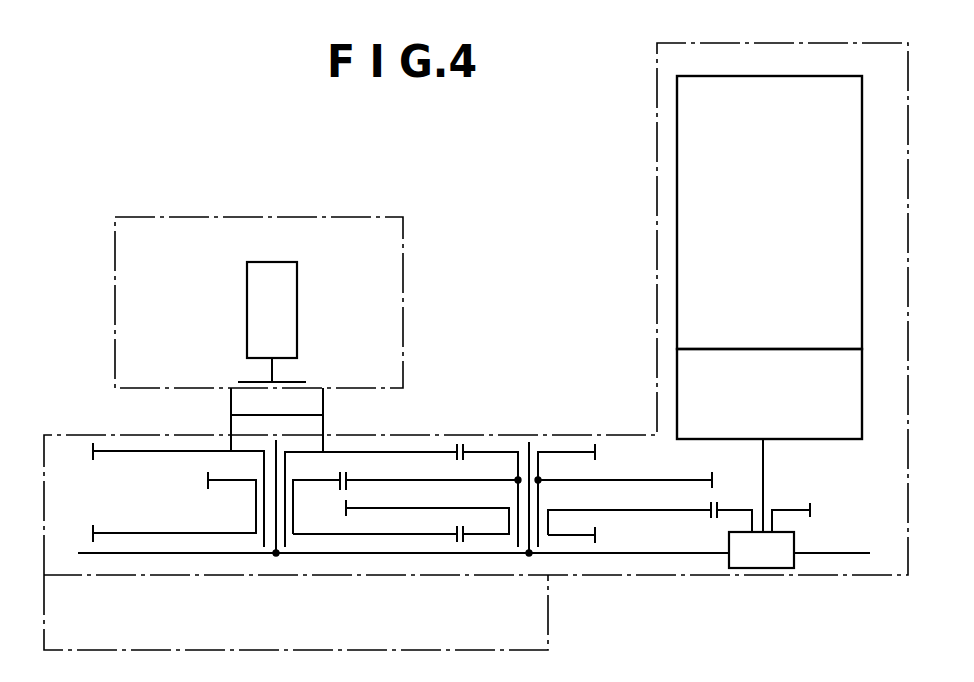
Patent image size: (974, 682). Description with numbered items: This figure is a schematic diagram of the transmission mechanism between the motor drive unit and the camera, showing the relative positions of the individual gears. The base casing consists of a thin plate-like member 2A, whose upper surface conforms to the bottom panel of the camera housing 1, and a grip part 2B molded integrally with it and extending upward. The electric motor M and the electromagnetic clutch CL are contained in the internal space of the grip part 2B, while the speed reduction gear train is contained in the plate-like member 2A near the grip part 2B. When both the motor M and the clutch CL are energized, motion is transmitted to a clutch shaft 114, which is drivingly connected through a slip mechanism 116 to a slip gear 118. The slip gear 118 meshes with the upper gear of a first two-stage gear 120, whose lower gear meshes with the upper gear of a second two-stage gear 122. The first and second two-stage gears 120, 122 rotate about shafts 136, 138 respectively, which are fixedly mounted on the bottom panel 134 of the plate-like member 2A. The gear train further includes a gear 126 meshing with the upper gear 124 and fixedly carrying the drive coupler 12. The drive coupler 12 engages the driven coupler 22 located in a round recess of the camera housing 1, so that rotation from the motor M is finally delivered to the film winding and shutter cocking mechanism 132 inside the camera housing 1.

The camera housing 1 is at (368, 215).
The film winding and shutter cocking mechanism 132 is at (297, 285).
The driven coupler 22 is at (245, 380).
The drive coupler 12 is at (325, 393).
The shaft 138 is at (278, 442).
The gear 126 is at (401, 452).
The second two-stage gear 122 is at (316, 535).
The shaft 136 is at (530, 444).
The bottom panel 134 is at (420, 554).
The upper gear 124 is at (606, 479).
The first two-stage gear 120 is at (642, 510).
The clutch shaft 114 is at (763, 470).
The slip gear 118 is at (812, 512).
The slip mechanism 116 is at (755, 568).
The plate-like member 2A is at (602, 575).
The grip part 2B is at (905, 80).
The electric motor M is at (845, 152).
The electromagnetic clutch CL is at (852, 390).